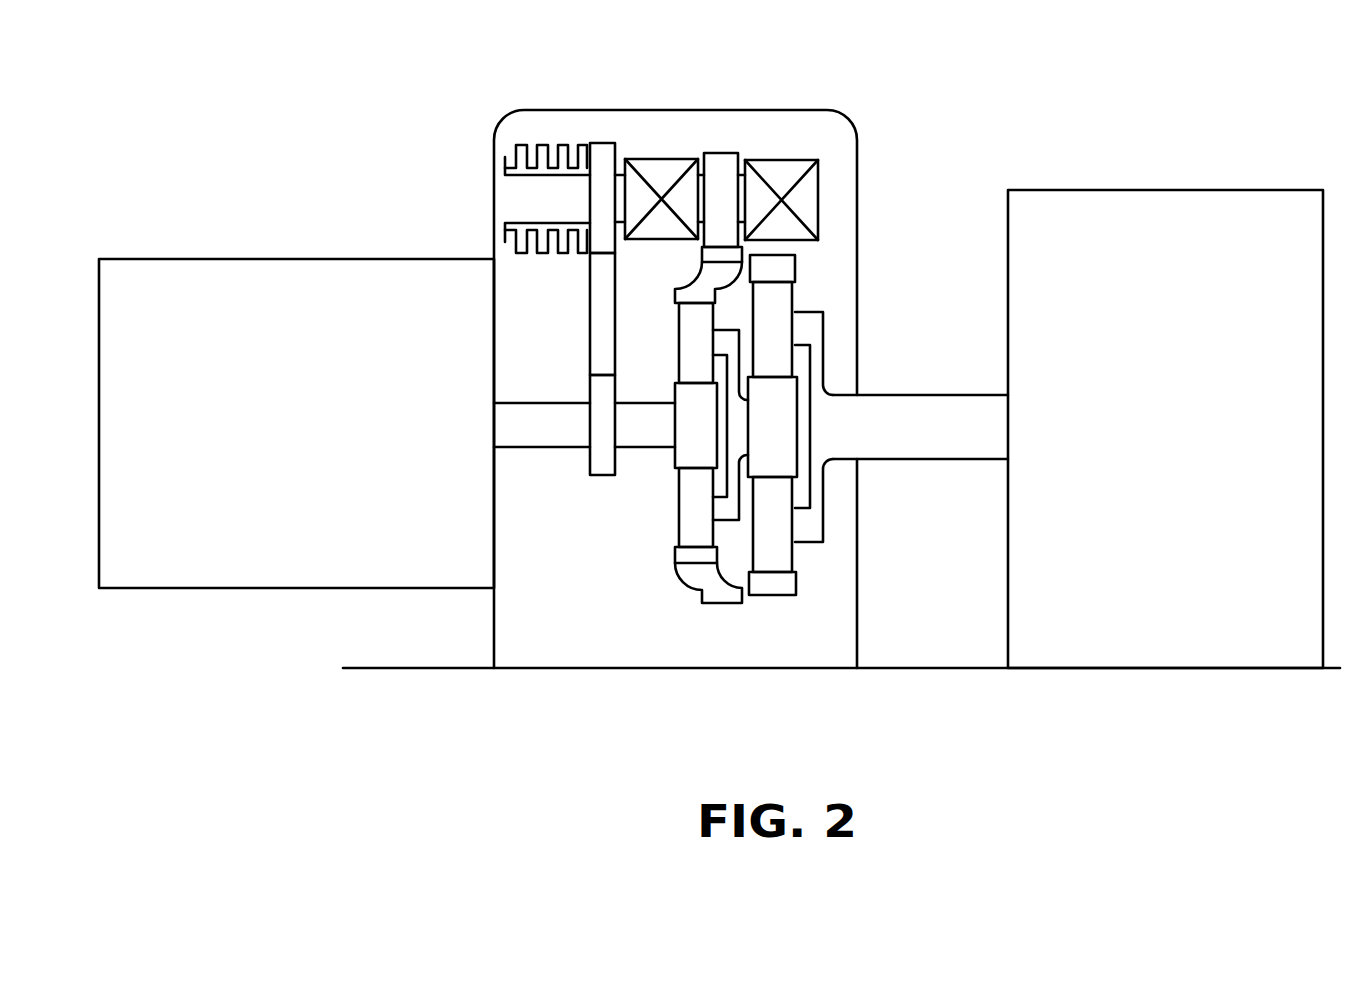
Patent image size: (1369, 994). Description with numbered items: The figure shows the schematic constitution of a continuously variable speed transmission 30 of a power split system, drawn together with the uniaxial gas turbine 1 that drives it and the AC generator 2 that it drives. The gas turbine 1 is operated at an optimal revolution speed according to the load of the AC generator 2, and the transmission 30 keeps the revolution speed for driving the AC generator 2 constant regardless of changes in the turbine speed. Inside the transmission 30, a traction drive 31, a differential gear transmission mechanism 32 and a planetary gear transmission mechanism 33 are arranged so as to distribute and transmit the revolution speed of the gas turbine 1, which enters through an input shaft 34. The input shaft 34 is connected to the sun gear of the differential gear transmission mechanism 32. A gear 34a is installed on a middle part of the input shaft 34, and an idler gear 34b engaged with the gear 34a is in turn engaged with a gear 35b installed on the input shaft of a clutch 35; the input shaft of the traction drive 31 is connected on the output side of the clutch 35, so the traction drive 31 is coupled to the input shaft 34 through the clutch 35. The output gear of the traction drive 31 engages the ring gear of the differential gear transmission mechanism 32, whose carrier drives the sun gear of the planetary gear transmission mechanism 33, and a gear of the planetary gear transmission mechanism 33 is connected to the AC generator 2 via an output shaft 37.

The uniaxial gas turbine 1 is at (242, 259).
The AC generator 2 is at (1167, 190).
The continuously variable speed transmission of a power split system 30 is at (787, 110).
The traction drive 31 is at (663, 143).
The differential gear transmission mechanism 32 is at (673, 608).
The planetary gear transmission mechanism 33 is at (772, 605).
The input shaft 34 is at (542, 450).
The gear 34a is at (602, 478).
The idler gear 34b is at (590, 328).
The clutch 35 is at (508, 140).
The gear 35b is at (598, 143).
The output shaft 37 is at (968, 459).